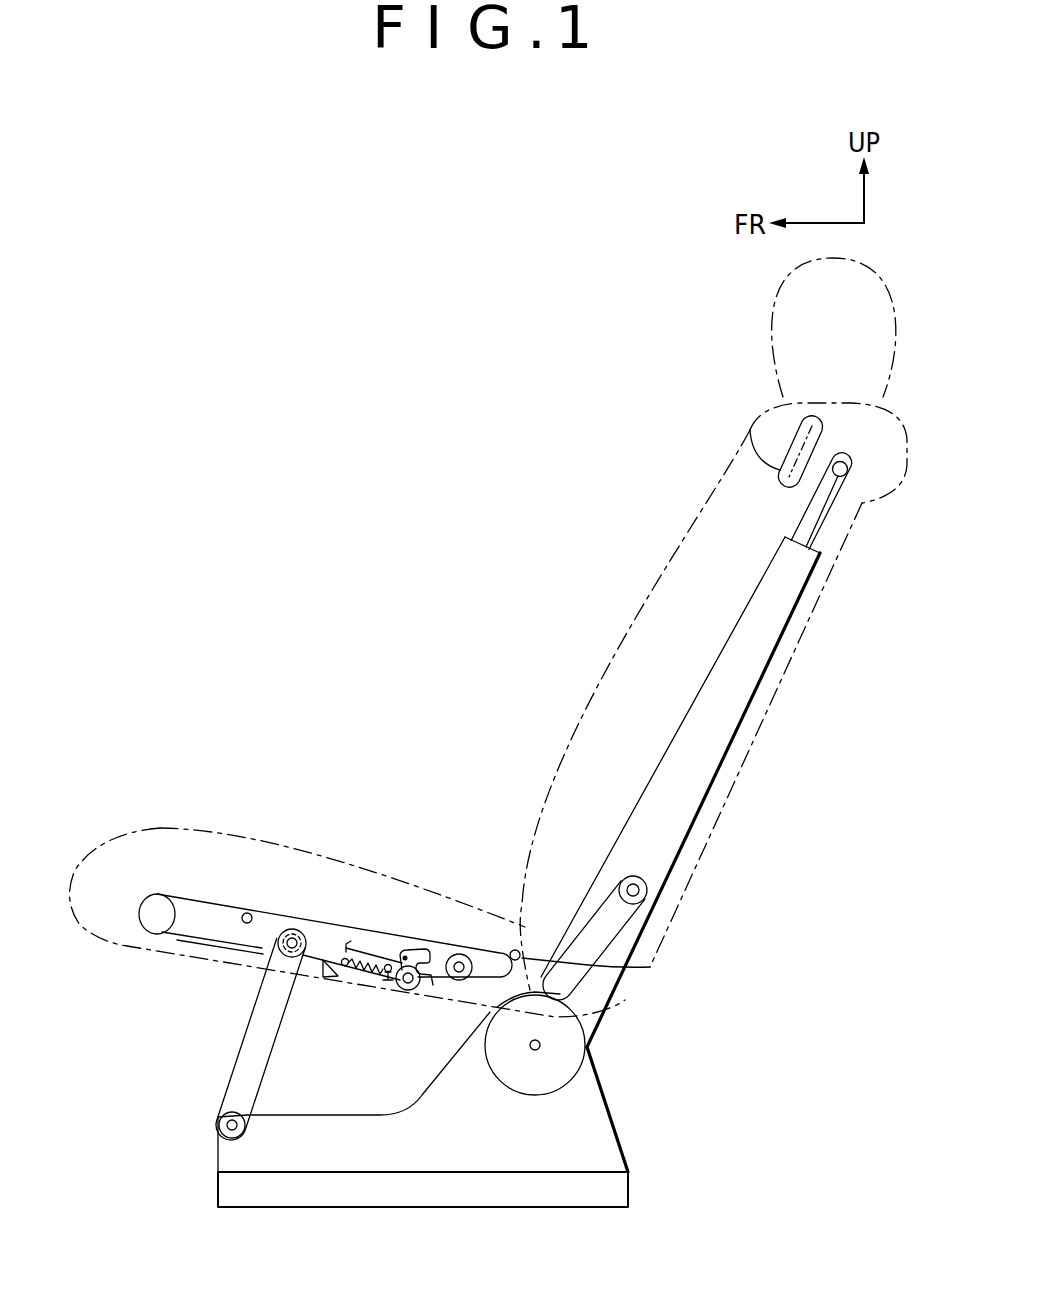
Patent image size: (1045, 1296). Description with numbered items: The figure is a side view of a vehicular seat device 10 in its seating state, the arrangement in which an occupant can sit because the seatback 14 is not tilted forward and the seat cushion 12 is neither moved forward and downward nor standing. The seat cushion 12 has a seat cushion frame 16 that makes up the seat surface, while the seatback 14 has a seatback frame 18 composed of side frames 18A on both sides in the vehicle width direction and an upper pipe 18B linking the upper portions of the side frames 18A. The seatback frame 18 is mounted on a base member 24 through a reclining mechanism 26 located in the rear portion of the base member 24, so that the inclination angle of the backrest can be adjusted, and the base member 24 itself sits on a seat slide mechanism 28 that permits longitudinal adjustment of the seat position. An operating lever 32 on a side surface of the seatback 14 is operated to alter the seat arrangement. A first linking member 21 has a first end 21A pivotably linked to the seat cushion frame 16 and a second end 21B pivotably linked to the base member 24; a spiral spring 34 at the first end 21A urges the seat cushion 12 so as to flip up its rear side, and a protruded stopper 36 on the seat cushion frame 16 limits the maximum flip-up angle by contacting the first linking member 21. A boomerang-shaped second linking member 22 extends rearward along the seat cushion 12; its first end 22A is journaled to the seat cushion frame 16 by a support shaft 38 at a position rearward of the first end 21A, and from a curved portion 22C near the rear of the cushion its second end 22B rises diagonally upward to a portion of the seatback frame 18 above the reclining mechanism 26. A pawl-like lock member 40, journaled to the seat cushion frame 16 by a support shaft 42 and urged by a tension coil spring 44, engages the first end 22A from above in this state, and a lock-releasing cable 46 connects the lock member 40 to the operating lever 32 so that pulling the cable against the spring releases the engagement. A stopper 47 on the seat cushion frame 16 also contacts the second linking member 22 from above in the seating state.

The vehicular seat device 10 is at (437, 407).
The seat cushion 12 is at (275, 843).
The seatback 14 is at (634, 628).
The seat cushion frame 16 is at (197, 897).
The seatback frame 18 is at (768, 682).
The side frame 18A is at (708, 733).
The upper pipe 18B is at (811, 534).
The first linking member 21 is at (232, 1060).
The first end of the first linking member 21A is at (288, 930).
The second end of the first linking member 21B is at (230, 1138).
The second linking member 22 is at (592, 902).
The first end of the second linking member 22A is at (426, 950).
The second end of the second linking member 22B is at (648, 880).
The curved portion 22C is at (577, 992).
The base member 24 is at (605, 1094).
The reclining mechanism 26 is at (570, 1038).
The seat slide mechanism 28 is at (453, 1172).
The operating lever 32 is at (748, 428).
The spiral spring 34 is at (330, 960).
The protruded stopper 36 is at (246, 913).
The support shaft 38 is at (460, 957).
The lock member 40 is at (401, 947).
The support shaft 42 is at (408, 990).
The tension coil spring 44 is at (370, 980).
The lock-releasing cable 46 is at (367, 947).
The stopper 47 is at (514, 950).